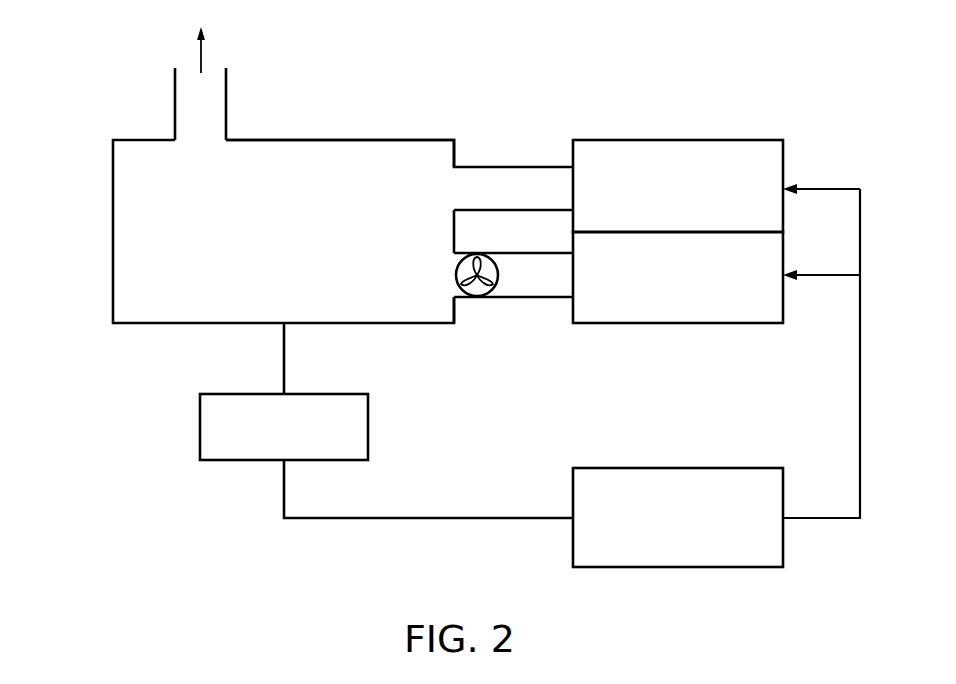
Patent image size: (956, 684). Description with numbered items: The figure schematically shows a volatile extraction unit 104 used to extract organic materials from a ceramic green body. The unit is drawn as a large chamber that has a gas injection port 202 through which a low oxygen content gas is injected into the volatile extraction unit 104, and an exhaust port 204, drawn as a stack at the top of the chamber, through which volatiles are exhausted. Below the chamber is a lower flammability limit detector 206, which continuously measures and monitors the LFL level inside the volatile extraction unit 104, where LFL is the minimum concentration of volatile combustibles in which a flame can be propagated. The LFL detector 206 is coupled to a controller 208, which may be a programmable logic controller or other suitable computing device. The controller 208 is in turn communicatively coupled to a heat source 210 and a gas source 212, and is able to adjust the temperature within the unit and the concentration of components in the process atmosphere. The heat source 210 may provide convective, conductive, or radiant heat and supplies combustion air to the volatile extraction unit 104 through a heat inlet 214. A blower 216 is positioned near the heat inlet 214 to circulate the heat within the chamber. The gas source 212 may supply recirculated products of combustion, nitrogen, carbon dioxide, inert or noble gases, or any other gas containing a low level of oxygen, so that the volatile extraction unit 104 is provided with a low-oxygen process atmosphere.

The volatile extraction unit 104 is at (113, 225).
The gas injection port 202 is at (455, 166).
The exhaust port 204 is at (226, 140).
The lower flammability limit (LFL) detector 206 is at (311, 441).
The controller 208 is at (705, 531).
The heat source 210 is at (698, 286).
The gas source 212 is at (698, 201).
The heat inlet 214 is at (455, 298).
The blower 216 is at (456, 275).